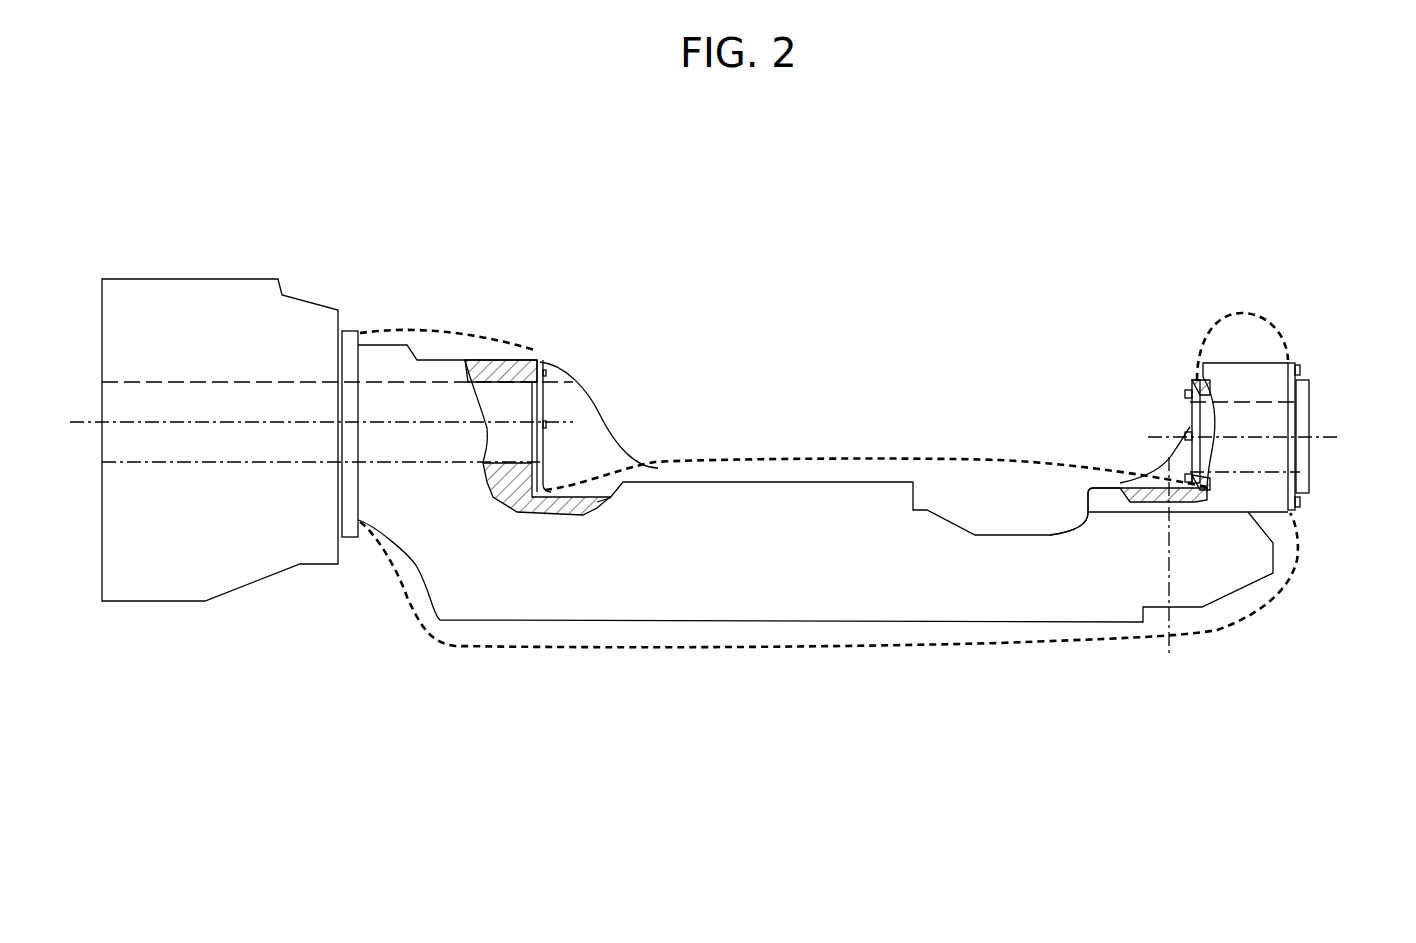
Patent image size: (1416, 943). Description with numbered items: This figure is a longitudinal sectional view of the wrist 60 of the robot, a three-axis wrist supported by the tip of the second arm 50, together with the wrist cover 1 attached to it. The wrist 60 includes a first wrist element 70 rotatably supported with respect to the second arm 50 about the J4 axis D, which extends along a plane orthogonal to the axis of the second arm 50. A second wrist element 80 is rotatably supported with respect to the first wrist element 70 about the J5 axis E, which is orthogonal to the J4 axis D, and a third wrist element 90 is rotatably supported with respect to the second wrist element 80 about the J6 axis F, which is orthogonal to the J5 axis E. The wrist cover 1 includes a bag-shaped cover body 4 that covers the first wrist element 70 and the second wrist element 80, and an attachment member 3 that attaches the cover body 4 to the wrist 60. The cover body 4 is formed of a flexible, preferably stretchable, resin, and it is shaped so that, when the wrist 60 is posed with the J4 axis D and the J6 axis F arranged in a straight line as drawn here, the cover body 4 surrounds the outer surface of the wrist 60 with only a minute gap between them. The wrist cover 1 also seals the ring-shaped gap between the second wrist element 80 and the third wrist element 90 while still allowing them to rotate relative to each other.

The wrist cover 1 is at (660, 418).
The attachment member 3 is at (352, 326).
The cover body 4 is at (820, 462).
The second arm 50 is at (126, 613).
The wrist 60 is at (795, 262).
The first wrist element 70 is at (868, 633).
The second wrist element 80 is at (1085, 480).
The third wrist element 90 is at (1325, 478).
The J4 axis D is at (82, 422).
The J5 axis E is at (1169, 570).
The J6 axis F is at (1325, 437).